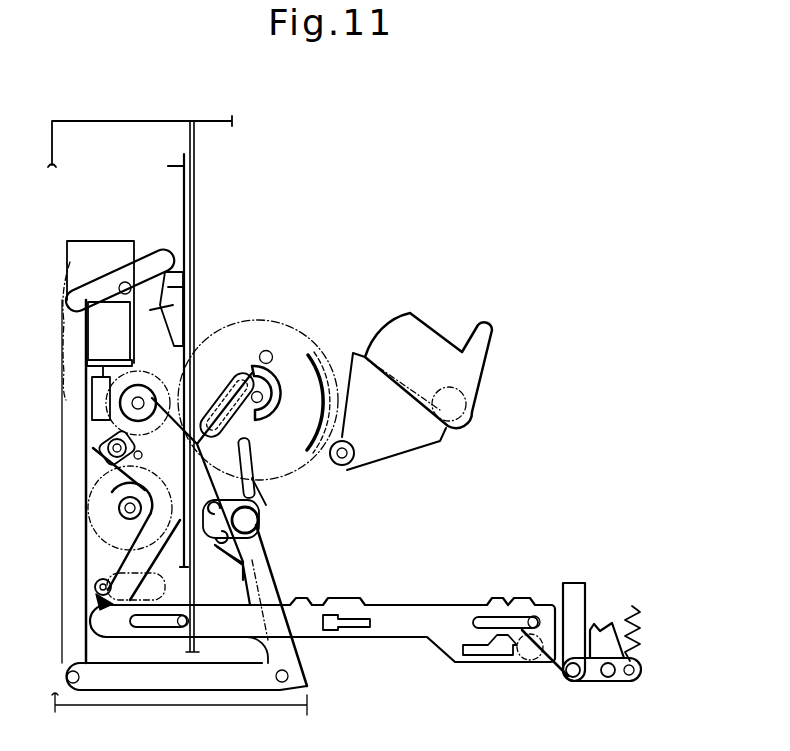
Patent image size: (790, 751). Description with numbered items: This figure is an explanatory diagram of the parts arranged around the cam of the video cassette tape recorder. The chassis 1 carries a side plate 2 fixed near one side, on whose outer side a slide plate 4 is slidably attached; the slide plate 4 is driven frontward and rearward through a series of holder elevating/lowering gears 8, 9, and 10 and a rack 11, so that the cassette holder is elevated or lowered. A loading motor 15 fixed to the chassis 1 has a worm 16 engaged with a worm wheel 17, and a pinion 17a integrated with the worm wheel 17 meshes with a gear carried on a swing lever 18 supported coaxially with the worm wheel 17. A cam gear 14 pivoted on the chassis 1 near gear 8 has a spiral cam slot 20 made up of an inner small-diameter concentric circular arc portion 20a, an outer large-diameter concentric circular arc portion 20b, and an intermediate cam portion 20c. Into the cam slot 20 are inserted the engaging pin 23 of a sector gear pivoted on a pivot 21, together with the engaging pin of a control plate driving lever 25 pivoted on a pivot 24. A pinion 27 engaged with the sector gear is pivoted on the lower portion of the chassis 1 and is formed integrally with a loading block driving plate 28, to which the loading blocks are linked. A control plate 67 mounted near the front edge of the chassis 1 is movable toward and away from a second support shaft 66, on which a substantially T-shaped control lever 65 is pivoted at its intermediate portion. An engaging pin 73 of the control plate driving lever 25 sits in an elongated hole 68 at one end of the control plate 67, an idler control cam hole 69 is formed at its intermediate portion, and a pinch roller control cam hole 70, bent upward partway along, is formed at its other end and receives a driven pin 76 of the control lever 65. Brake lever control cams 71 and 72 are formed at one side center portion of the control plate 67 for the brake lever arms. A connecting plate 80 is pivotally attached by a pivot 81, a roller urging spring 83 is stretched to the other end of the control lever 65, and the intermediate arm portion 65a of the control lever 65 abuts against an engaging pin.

The chassis 1 is at (70, 118).
The side plate 2 is at (200, 149).
The slide plate 4 is at (188, 232).
The holder elevating/lowering gear 8 is at (90, 540).
The holder elevating/lowering gear 9 is at (80, 575).
The holder elevating/lowering gear 10 is at (110, 432).
The rack 11 is at (162, 210).
The cam gear 14 is at (240, 330).
The loading motor 15 is at (104, 241).
The worm 16 is at (92, 403).
The worm wheel 17 is at (206, 318).
The pinion 17a is at (88, 382).
The swing lever 18 is at (271, 520).
The spiral cam slot 20 is at (315, 412).
The inner small-diameter concentric circular arc portion 20a is at (270, 365).
The outer large-diameter concentric circular arc portion 20b is at (330, 407).
The intermediate cam portion 20c is at (245, 438).
The pivot 21 is at (346, 470).
The engaging pin 23 is at (268, 505).
The pivot 24 is at (103, 460).
The control plate driving lever 25 is at (105, 456).
The pinion 27 is at (466, 415).
The loading block driving plate 28 is at (407, 320).
The control lever 65 is at (624, 684).
The intermediate arm portion 65a is at (598, 625).
The second support shaft 66 is at (606, 680).
The control plate 67 is at (415, 642).
The elongated hole 68 is at (101, 610).
The idler control cam hole 69 is at (332, 627).
The pinch roller control cam hole 70 is at (492, 660).
The brake lever control cam 71 is at (343, 592).
The brake lever control cam 72 is at (505, 590).
The engaging pin 73 is at (96, 590).
The driven pin 76 is at (525, 663).
The connecting plate 80 is at (570, 583).
The pivot 81 is at (572, 680).
The roller urging spring 83 is at (643, 618).